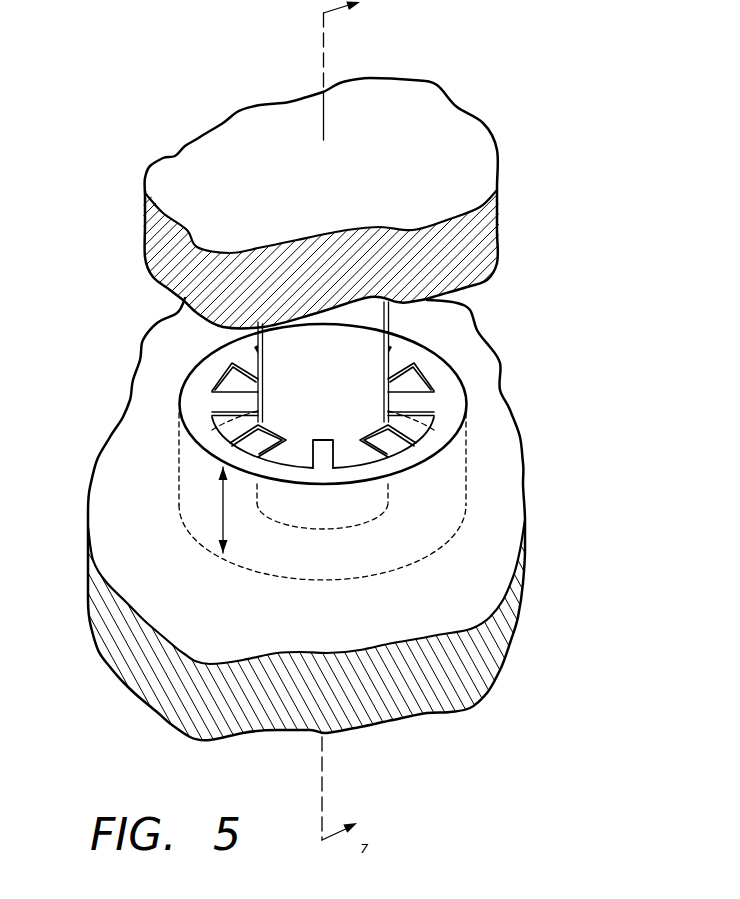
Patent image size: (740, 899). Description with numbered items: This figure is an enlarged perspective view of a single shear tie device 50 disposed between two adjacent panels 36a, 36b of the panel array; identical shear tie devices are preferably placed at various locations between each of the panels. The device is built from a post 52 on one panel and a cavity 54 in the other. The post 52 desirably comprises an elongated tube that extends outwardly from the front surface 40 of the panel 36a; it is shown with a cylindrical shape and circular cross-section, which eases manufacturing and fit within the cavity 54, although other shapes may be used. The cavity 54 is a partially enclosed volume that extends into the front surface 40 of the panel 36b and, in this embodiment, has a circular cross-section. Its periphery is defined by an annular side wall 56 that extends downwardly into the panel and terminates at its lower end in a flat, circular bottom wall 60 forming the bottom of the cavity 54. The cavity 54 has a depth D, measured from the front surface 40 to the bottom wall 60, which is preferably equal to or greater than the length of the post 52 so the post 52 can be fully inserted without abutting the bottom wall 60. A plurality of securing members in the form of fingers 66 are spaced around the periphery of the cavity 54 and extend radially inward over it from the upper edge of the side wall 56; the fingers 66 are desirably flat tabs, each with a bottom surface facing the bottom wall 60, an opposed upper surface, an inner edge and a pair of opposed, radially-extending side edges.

The panel 36a is at (380, 105).
The panel 36b is at (489, 532).
The front surface 40 is at (483, 284).
The shear tie device 50 is at (362, 379).
The post 52 is at (356, 351).
The cavity 54 is at (418, 380).
The annular side wall 56 is at (478, 427).
The bottom wall 60 is at (302, 552).
The fingers 66 is at (233, 402).